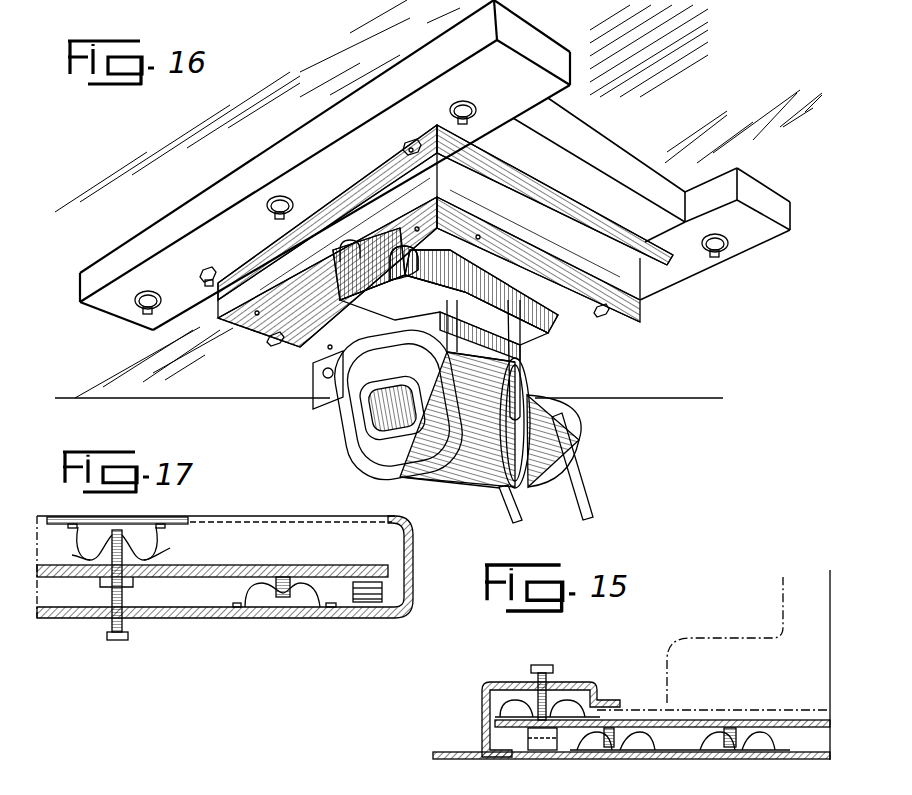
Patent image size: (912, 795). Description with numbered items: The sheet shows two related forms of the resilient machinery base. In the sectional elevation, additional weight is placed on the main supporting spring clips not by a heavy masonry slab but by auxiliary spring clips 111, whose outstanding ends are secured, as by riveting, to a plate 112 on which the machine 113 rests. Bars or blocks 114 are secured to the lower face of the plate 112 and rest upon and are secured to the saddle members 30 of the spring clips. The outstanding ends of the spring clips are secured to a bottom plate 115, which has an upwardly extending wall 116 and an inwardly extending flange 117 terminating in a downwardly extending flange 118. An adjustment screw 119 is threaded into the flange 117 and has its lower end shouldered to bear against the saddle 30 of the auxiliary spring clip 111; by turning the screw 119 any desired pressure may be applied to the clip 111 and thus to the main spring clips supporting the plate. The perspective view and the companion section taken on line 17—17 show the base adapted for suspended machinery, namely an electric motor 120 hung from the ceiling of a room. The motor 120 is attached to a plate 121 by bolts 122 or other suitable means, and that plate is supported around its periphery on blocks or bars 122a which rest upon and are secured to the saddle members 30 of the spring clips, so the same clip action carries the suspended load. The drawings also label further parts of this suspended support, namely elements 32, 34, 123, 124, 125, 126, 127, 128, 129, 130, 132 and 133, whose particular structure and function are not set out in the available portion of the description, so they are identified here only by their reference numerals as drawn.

In FIG. 16, the section line 17 is at (515, 252).
In FIG. 16, the saddle member 30 is at (575, 322).
In FIG. 17, the saddle member 30 is at (88, 560).
In FIG. 16, the mounting block 32 is at (568, 330).
In FIG. 17, the mounting block 32 is at (355, 586).
In FIG. 17, the fastener 34 is at (343, 604).
In FIG. 15, the auxiliary spring clip 111 is at (570, 700).
In FIG. 15, the plate 112 is at (797, 730).
In FIG. 15, the machine 113 is at (722, 647).
In FIG. 15, the bars or blocks 114 is at (563, 744).
In FIG. 15, the bottom plate 115 is at (497, 757).
In FIG. 15, the upwardly extending wall 116 is at (482, 708).
In FIG. 15, the inwardly extending flange 117 is at (508, 682).
In FIG. 15, the downwardly extending flange 118 is at (597, 700).
In FIG. 15, the adjustment screw 119 is at (548, 666).
In FIG. 16, the electric motor 120 is at (357, 447).
In FIG. 16, the plate 121 is at (590, 283).
In FIG. 17, the plate 121 is at (270, 566).
In FIG. 16, the bolts 122 is at (283, 330).
In FIG. 16, the blocks or bars 122a is at (640, 300).
In FIG. 17, the blocks or bars 122a is at (373, 548).
In FIG. 16, the base plate 123 is at (610, 312).
In FIG. 17, the base plate 123 is at (363, 620).
In FIG. 16, the channel bottom 124 is at (205, 320).
In FIG. 17, the channel bottom 124 is at (412, 603).
In FIG. 16, the channel 125 is at (643, 280).
In FIG. 17, the channel 125 is at (413, 562).
In FIG. 17, the top flange 126 is at (418, 518).
In FIG. 16, the screw 127 is at (408, 147).
In FIG. 16, the beam 128 is at (533, 47).
In FIG. 16, the bolt 129 is at (478, 113).
In FIG. 16, the bolt 130 is at (558, 263).
In FIG. 17, the bolt 130 is at (130, 634).
In FIG. 17, the resilient strip 132 is at (170, 548).
In FIG. 17, the retaining bar 133 is at (181, 516).